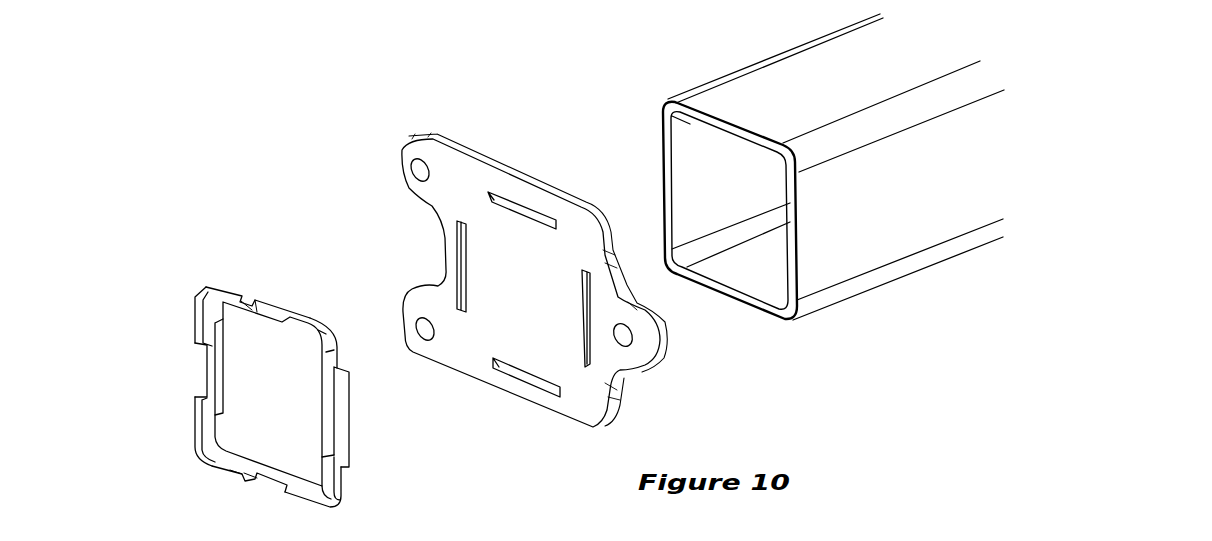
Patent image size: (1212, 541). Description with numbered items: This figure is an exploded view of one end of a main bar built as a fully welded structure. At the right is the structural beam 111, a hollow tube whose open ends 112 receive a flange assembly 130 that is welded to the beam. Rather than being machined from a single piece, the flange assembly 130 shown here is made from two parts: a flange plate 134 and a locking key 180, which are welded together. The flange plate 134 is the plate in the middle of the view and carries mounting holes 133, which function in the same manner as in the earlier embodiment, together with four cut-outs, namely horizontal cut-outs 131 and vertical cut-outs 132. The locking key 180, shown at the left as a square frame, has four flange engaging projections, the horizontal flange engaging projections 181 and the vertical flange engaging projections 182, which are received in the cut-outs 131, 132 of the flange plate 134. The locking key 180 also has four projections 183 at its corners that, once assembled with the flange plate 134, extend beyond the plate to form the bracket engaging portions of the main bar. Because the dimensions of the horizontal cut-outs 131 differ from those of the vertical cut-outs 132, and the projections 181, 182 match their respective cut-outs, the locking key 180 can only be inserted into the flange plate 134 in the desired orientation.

The structural beam 111 is at (880, 236).
The ends of the beam 112 is at (723, 117).
The flange assembly 130 is at (496, 266).
The horizontal cut-outs 131 is at (526, 212).
The vertical cut-outs 132 is at (583, 325).
The mounting holes 133 is at (417, 171).
The flange plate 134 is at (523, 308).
The locking key 180 is at (270, 375).
The horizontal flange engaging projections 181 is at (280, 298).
The vertical flange engaging projections 182 is at (345, 432).
The projections forming bracket engaging portions 183 is at (200, 298).